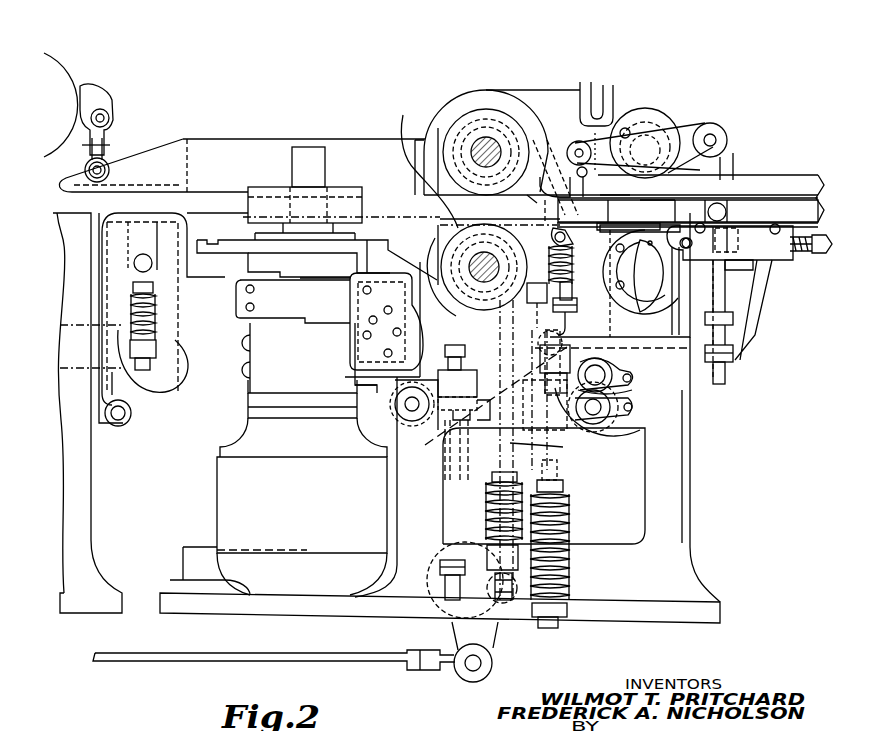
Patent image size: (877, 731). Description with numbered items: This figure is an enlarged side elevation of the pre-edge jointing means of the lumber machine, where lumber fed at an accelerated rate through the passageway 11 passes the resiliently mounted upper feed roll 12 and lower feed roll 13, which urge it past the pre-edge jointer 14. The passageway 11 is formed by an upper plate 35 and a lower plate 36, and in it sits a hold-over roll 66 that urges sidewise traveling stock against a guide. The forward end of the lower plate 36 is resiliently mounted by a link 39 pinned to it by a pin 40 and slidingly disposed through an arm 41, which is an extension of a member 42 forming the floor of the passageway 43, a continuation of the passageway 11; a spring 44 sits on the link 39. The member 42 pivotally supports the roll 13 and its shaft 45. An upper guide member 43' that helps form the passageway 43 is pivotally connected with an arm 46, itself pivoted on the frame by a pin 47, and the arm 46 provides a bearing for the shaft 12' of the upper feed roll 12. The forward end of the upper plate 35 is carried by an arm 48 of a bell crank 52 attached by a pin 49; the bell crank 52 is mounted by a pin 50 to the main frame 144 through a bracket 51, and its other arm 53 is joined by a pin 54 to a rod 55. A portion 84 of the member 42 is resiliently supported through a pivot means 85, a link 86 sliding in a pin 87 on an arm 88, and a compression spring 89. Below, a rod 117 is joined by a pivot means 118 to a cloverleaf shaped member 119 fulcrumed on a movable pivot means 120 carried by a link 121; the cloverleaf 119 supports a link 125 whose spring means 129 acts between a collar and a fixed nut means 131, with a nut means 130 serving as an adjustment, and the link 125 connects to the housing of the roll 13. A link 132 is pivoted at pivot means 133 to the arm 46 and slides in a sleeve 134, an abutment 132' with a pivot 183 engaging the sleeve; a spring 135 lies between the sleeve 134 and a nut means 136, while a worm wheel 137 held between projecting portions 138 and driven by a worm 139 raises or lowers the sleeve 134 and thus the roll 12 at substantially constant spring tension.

The passageway 11 is at (570, 211).
The upper feed roll 12 is at (502, 120).
The shaft of the upper feed roll 12' is at (490, 116).
The lower feed roll 13 is at (425, 159).
The pre-edge jointer 14 is at (338, 186).
The upper plate 35 is at (745, 200).
The lower plate 36 is at (592, 221).
The link 39 is at (570, 306).
The pin 40 is at (570, 256).
The arm 41 is at (542, 295).
The member 42 is at (215, 268).
The passageway 43 is at (217, 186).
The upper guide member 43' is at (242, 152).
The spring 44 is at (566, 268).
The shaft 45 is at (466, 281).
The arm 46 is at (545, 100).
The pin 47 is at (655, 135).
The arm of bell crank 48 is at (607, 147).
The pin 49 is at (575, 150).
The pin 50 is at (712, 142).
The bracket 51 is at (637, 125).
The bell crank 52 is at (703, 130).
The arm of bell crank 53 is at (720, 167).
The pin 54 is at (708, 212).
The rod 55 is at (774, 208).
The hold-over roll 66 is at (662, 210).
The portion of member 42 84 is at (150, 272).
The pivot means 85 is at (150, 307).
The link 86 is at (153, 330).
The pin 87 is at (153, 352).
The arm 88 is at (117, 367).
The compression spring 89 is at (135, 311).
The rod 117 is at (317, 654).
The pivot means 118 is at (482, 664).
The cloverleaf shaped member 119 is at (493, 633).
The movable pivot means 120 is at (450, 573).
The link 121 is at (447, 483).
The link 125 is at (530, 458).
The spring means 129 is at (485, 545).
The nut means 130 is at (488, 595).
The nut means 131 is at (553, 477).
The link 132 is at (555, 264).
The abutment 132' is at (522, 368).
The pivot means 133 is at (533, 153).
The sleeve 134 is at (628, 424).
The spring 135 is at (568, 531).
The nut means 136 is at (560, 627).
The worm wheel 137 is at (635, 383).
The projecting portions 138 is at (450, 430).
The worm 139 is at (633, 393).
The main frame 144 is at (690, 572).
The pivot 183 is at (548, 342).